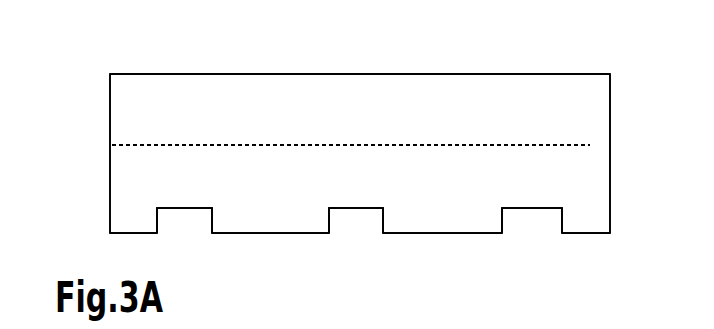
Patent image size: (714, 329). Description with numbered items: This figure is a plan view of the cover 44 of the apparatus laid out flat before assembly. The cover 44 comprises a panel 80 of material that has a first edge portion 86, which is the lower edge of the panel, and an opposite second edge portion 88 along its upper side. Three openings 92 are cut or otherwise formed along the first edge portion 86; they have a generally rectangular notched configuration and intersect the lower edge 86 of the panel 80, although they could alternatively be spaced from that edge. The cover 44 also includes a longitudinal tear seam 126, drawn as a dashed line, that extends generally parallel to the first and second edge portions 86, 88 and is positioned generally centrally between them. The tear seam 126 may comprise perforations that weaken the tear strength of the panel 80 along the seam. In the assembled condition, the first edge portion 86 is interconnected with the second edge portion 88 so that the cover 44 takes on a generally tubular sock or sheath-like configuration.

The cover 44 is at (77, 130).
The panel 80 is at (462, 89).
The second edge portion 88 is at (601, 75).
The longitudinal tear seam 126 is at (590, 145).
The first edge portion 86 is at (575, 234).
The openings 92 is at (197, 230).